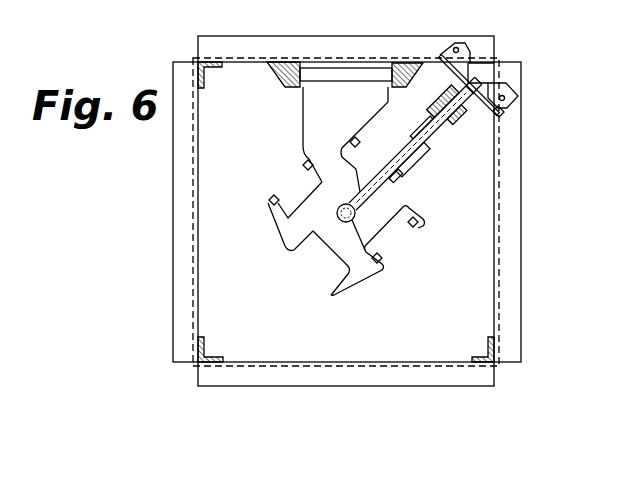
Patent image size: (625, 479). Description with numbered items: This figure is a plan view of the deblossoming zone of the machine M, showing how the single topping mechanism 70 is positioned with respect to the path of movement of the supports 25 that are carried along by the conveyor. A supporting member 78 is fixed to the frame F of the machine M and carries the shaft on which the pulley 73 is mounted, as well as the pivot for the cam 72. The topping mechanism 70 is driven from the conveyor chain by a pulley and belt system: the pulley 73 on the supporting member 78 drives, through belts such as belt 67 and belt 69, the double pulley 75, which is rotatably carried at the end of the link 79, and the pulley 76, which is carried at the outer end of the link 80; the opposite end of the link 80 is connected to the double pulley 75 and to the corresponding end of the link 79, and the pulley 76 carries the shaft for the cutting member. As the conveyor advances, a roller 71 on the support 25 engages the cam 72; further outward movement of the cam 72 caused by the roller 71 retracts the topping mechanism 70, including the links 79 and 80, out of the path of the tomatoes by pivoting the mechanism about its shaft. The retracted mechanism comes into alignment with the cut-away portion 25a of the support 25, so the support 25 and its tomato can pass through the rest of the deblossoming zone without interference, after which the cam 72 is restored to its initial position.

The support 25 is at (312, 100).
The cut-away portion 25a is at (352, 146).
The belt 67 is at (472, 97).
The belt 69 is at (338, 181).
The topping mechanism 70 is at (410, 135).
The roller 71 is at (396, 178).
The cam 72 is at (408, 163).
The pulley 73 is at (456, 126).
The double pulley 75 is at (438, 100).
The pulley 76 is at (338, 236).
The supporting member 78 is at (444, 55).
The link 79 is at (455, 122).
The link 80 is at (421, 125).
The frame F is at (180, 226).
The machine M is at (554, 256).